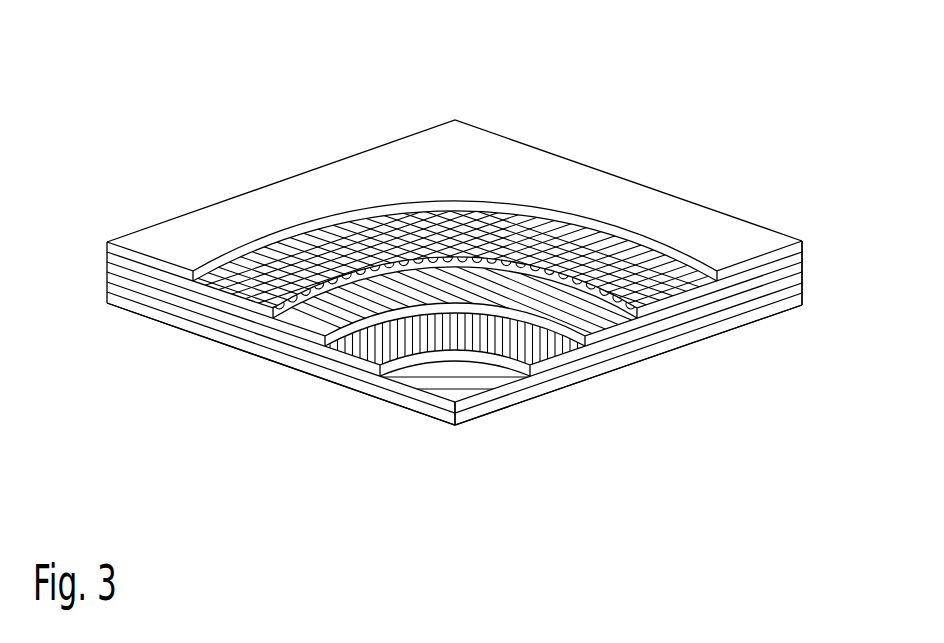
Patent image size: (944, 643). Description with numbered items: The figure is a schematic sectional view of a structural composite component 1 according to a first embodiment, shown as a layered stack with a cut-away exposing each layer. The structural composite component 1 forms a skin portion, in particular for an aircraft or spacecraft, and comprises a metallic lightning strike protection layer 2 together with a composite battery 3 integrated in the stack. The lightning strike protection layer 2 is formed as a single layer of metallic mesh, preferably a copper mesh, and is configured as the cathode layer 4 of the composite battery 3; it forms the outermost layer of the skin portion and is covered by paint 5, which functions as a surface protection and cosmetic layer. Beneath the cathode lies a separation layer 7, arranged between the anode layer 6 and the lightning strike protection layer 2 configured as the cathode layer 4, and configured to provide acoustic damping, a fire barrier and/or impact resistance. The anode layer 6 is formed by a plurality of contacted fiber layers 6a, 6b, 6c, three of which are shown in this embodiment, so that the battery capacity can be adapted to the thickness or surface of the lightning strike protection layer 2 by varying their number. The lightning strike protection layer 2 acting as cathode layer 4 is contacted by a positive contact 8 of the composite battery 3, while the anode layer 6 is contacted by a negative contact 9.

The structural composite component 1 is at (575, 73).
The lightning strike protection layer 2 is at (452, 310).
The cathode layer 4 is at (263, 275).
The composite battery 3 is at (820, 223).
The paint 5 is at (602, 192).
The anode layer 6 is at (454, 381).
The fiber layer 6a is at (528, 343).
The fiber layer 6b is at (473, 378).
The fiber layer 6c is at (480, 413).
The separation layer 7 is at (582, 315).
The positive contact 8 is at (235, 300).
The negative contact 9 is at (353, 386).